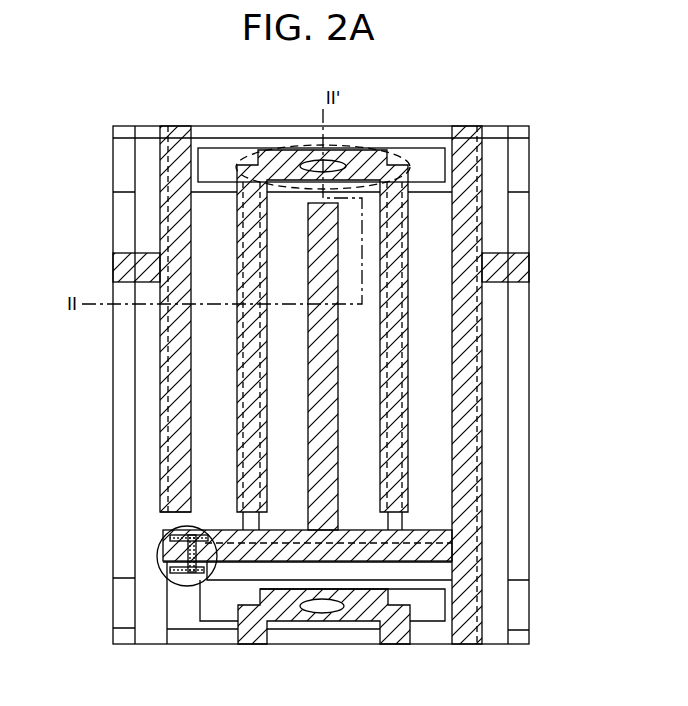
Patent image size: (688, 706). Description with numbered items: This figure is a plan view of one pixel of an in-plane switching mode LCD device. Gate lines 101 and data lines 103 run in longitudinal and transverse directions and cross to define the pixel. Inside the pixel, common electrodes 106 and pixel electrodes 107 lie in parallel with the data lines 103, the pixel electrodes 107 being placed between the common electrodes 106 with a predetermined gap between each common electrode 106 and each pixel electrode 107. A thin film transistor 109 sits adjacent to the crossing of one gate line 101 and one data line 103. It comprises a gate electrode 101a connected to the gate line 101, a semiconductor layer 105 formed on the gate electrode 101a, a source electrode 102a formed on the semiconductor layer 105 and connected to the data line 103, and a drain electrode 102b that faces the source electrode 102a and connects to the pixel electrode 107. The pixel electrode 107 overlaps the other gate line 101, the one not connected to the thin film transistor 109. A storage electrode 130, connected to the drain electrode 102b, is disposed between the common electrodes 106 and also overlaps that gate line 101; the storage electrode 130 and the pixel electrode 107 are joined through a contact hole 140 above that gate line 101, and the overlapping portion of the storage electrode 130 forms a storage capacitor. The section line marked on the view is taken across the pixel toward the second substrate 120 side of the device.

The gate line 101 is at (520, 605).
The gate electrode 101a is at (165, 513).
The source electrode 102a is at (157, 546).
The drain electrode 102b is at (200, 582).
The data line 103 is at (151, 626).
The semiconductor layer 105 is at (163, 526).
The common electrode 106 is at (467, 388).
The pixel electrode 107 is at (403, 352).
The thin film transistor 109 is at (157, 563).
The second substrate 120 is at (343, 133).
The storage electrode 130 is at (425, 167).
The contact hole 140 is at (313, 157).